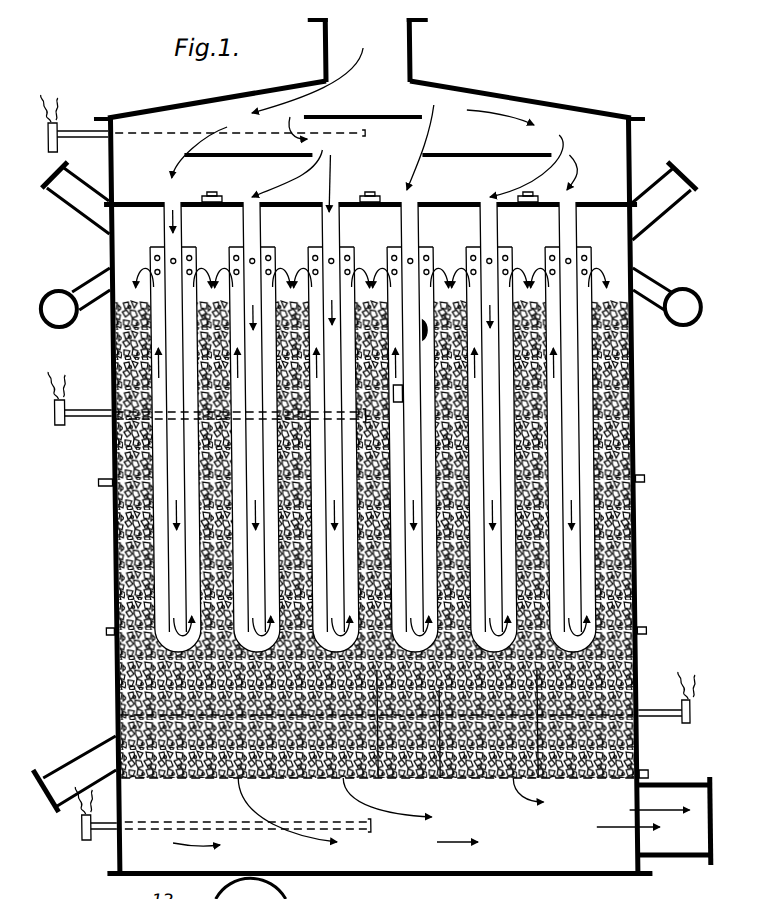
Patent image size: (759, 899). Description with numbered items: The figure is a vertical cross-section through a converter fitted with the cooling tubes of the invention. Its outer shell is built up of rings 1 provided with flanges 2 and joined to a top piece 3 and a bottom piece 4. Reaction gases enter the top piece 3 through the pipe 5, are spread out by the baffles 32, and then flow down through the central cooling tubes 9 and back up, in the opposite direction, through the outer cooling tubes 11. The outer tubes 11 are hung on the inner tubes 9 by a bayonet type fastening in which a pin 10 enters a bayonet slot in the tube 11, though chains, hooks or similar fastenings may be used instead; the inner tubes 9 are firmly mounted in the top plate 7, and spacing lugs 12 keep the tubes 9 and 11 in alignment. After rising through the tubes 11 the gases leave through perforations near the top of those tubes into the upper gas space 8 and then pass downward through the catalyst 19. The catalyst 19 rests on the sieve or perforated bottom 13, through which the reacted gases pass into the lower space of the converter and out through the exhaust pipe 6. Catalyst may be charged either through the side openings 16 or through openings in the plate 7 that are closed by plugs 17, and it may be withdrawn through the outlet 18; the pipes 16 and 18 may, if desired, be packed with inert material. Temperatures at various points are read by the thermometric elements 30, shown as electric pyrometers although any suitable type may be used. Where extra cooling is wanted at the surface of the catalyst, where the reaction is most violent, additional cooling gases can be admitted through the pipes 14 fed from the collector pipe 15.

The rings 1 is at (632, 410).
The flanges 2 is at (641, 478).
The top piece 3 is at (524, 97).
The bottom piece 4 is at (437, 877).
The pipe 5 is at (370, 47).
The exhaust pipe 6 is at (705, 813).
The top plate 7 is at (134, 202).
The upper gas space 8 is at (286, 249).
The central cooling tubes 9 is at (243, 219).
The pin 10 is at (252, 258).
The outer cooling tubes 11 is at (277, 250).
The spacing lugs 12 is at (396, 404).
The sieve or perforated bottom 13 is at (434, 780).
The pipes 14 is at (85, 290).
The collector pipe 15 is at (42, 305).
The side openings 16 is at (68, 206).
The plugs 17 is at (214, 192).
The outlet 18 is at (63, 768).
The catalyst 19 is at (638, 583).
The thermometric elements 30 is at (49, 140).
The baffles 32 is at (370, 115).